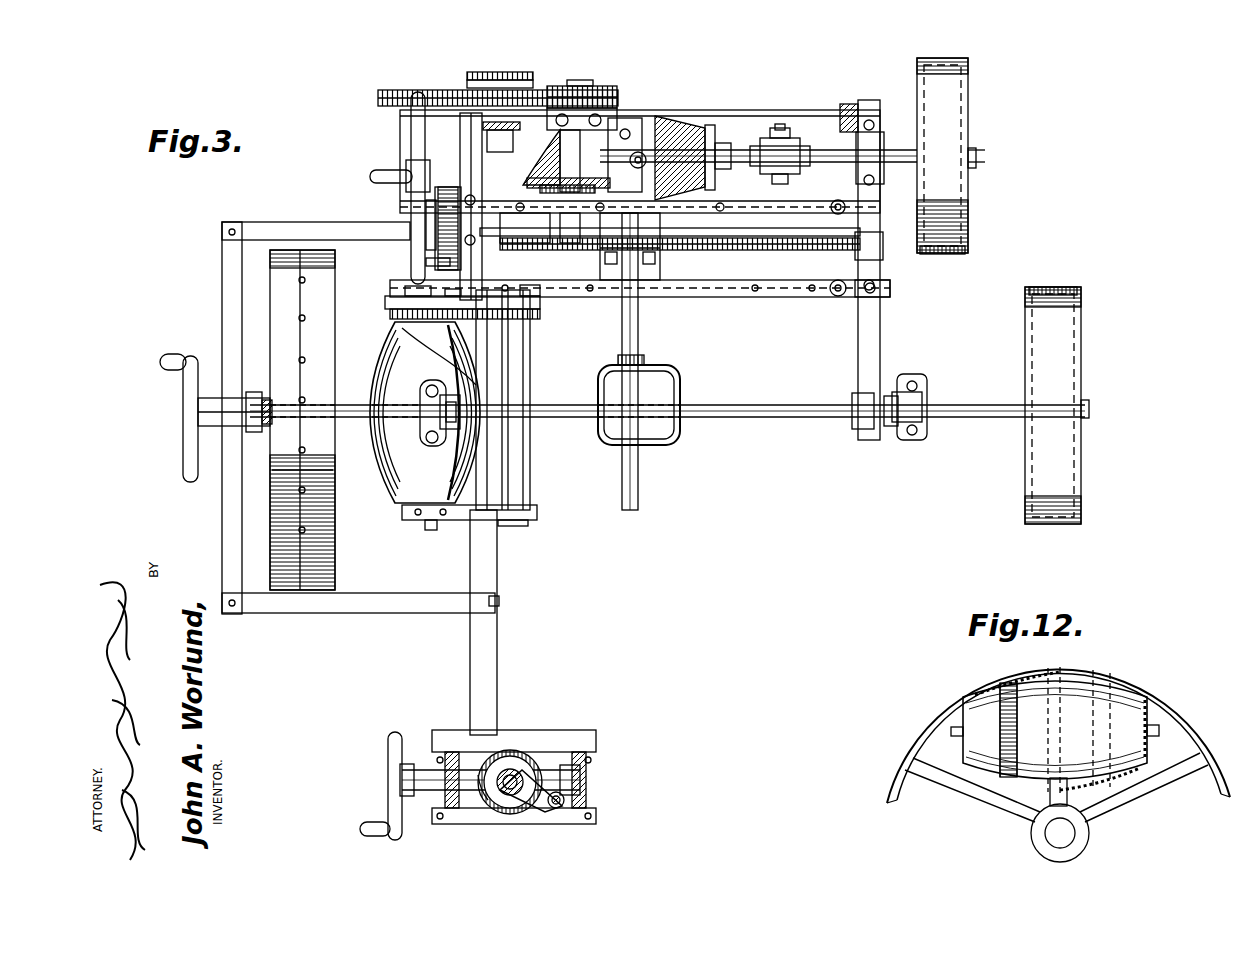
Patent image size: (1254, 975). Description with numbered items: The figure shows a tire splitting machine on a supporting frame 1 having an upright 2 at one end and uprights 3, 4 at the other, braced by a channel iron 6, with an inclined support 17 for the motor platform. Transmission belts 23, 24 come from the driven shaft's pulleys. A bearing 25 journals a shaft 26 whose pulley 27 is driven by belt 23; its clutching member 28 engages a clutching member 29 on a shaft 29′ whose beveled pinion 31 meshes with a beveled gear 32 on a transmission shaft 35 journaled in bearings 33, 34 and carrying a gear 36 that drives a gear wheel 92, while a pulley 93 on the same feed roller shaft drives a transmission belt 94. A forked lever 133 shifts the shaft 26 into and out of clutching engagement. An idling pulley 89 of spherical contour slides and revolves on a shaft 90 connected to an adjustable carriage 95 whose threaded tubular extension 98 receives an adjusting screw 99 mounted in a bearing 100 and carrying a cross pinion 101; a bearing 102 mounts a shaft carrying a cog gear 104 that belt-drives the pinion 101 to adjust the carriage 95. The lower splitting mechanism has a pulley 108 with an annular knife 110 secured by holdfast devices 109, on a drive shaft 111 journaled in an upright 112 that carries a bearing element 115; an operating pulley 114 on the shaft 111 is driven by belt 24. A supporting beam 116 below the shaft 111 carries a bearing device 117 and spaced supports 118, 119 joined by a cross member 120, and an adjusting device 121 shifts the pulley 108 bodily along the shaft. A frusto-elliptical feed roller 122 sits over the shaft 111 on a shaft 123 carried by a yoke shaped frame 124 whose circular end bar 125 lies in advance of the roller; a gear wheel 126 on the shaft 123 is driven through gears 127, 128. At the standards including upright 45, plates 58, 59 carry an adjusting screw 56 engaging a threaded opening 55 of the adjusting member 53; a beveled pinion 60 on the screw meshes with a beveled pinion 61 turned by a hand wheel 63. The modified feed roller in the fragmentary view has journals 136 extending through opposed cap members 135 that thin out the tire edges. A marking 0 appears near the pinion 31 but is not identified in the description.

In FIG. 3, the supporting frame 1 is at (771, 110).
In FIG. 3, the upright 2 is at (850, 104).
In FIG. 3, the upright 3 is at (488, 135).
In FIG. 3, the upright 4 is at (535, 297).
In FIG. 3, the channel iron 6 is at (466, 119).
In FIG. 3, the pivot 0 is at (642, 120).
In FIG. 3, the support 17 is at (886, 297).
In FIG. 3, the transmission belt 23 is at (948, 256).
In FIG. 3, the transmission belt 24 is at (1050, 287).
In FIG. 3, the bearing 25 is at (880, 148).
In FIG. 3, the shaft 26 is at (738, 148).
In FIG. 3, the pulley 27 is at (955, 180).
In FIG. 3, the clutching member 28 is at (709, 125).
In FIG. 3, the clutching member 29 is at (672, 118).
In FIG. 3, the shaft 29′ is at (706, 168).
In FIG. 3, the beveled pinion 31 is at (625, 118).
In FIG. 3, the beveled gear 32 is at (529, 228).
In FIG. 3, the bearing 33 is at (598, 108).
In FIG. 3, the bearing 34 is at (575, 228).
In FIG. 3, the transmission shaft 35 is at (575, 160).
In FIG. 3, the gear 36 is at (578, 86).
In FIG. 3, the upright 45 is at (580, 768).
In FIG. 3, the adjusting member 53 is at (566, 800).
In FIG. 3, the opening 55 is at (548, 780).
In FIG. 3, the adjusting screw 56 is at (512, 790).
In FIG. 3, the plate 58 is at (542, 730).
In FIG. 3, the plate 59 is at (548, 824).
In FIG. 3, the beveled pinion 60 is at (485, 805).
In FIG. 3, the beveled pinion 61 is at (498, 755).
In FIG. 3, the hand wheel 63 is at (386, 746).
In FIG. 3, the idling pulley 89 is at (668, 378).
In FIG. 3, the shaft 90 is at (640, 316).
In FIG. 3, the gear wheel 92 is at (390, 90).
In FIG. 3, the pulley 93 is at (480, 73).
In FIG. 3, the transmission belt 94 is at (475, 83).
In FIG. 3, the adjustable carriage 95 is at (662, 258).
In FIG. 3, the tubular extension 98 is at (662, 238).
In FIG. 3, the adjusting screw 99 is at (757, 238).
In FIG. 3, the bearing 100 is at (862, 250).
In FIG. 3, the cross pinion 101 is at (430, 258).
In FIG. 3, the bearing 102 is at (440, 182).
In FIG. 3, the cog gear 104 is at (440, 222).
In FIG. 3, the pulley 108 is at (282, 481).
In FIG. 3, the holdfast devices 109 is at (272, 511).
In FIG. 3, the annular knife 110 is at (326, 465).
In FIG. 3, the drive shaft 111 is at (772, 418).
In FIG. 3, the upright 112 is at (880, 430).
In FIG. 3, the operating pulley 114 is at (1062, 436).
In FIG. 3, the bearing element 115 is at (908, 412).
In FIG. 3, the supporting beam 116 is at (484, 632).
In FIG. 3, the bearing device 117 is at (466, 380).
In FIG. 3, the support 118 is at (268, 224).
In FIG. 3, the support 119 is at (316, 612).
In FIG. 3, the cross member 120 is at (230, 420).
In FIG. 3, the adjusting device 121 is at (210, 408).
In FIG. 3, the feed roller 122 is at (392, 348).
In FIG. 12, the feed roller 122 is at (1068, 682).
In FIG. 3, the shaft 123 is at (430, 528).
In FIG. 3, the yoke shaped frame 124 is at (530, 505).
In FIG. 3, the end bar 125 is at (530, 448).
In FIG. 3, the gear wheel 126 is at (392, 298).
In FIG. 3, the gear 127 is at (440, 350).
In FIG. 3, the gear 128 is at (540, 314).
In FIG. 3, the forked lever 133 is at (790, 138).
In FIG. 12, the cap members 135 is at (1118, 684).
In FIG. 12, the protuberance 136 is at (1160, 728).